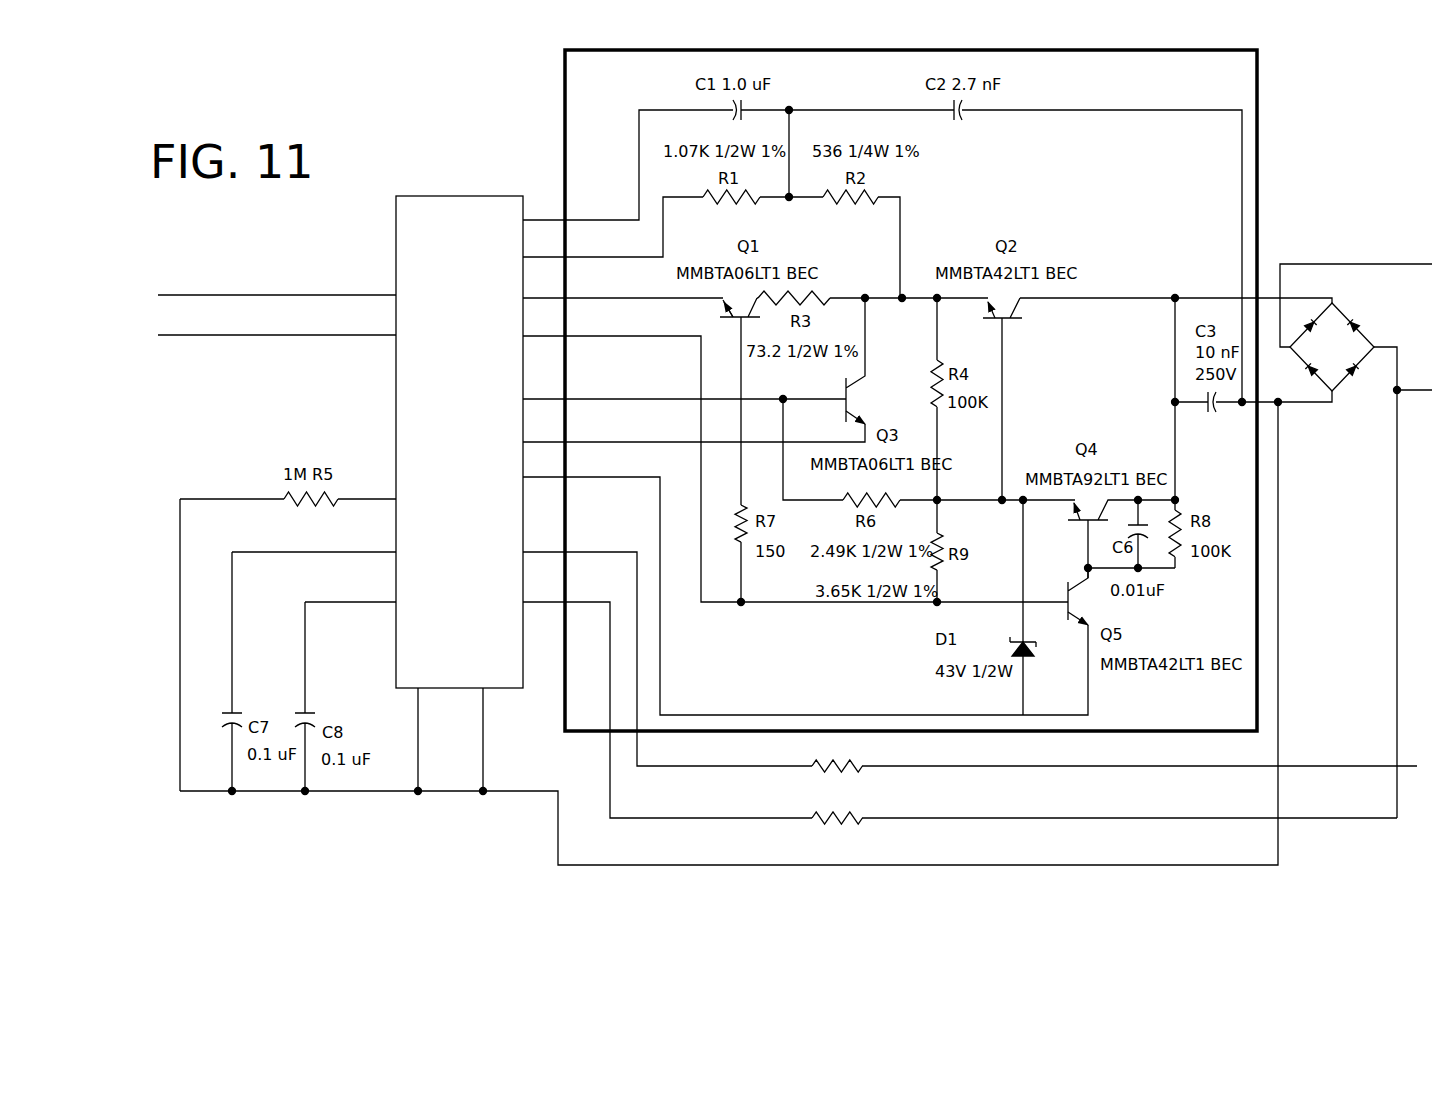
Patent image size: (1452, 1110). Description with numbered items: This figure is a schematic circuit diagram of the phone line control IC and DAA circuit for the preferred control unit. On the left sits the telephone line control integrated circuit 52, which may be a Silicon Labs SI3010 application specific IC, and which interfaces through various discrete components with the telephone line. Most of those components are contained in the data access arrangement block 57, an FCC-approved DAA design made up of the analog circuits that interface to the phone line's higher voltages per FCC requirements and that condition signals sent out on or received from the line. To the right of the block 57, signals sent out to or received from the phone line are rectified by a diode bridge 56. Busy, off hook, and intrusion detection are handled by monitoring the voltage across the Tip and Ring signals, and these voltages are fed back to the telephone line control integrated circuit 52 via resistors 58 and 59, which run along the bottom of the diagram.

The telephone line control integrated circuit 52 is at (400, 190).
The diode bridge 56 is at (1323, 292).
The data access arrangement (DAA) block 57 is at (553, 148).
The resistor 58 is at (806, 775).
The resistor 59 is at (806, 830).